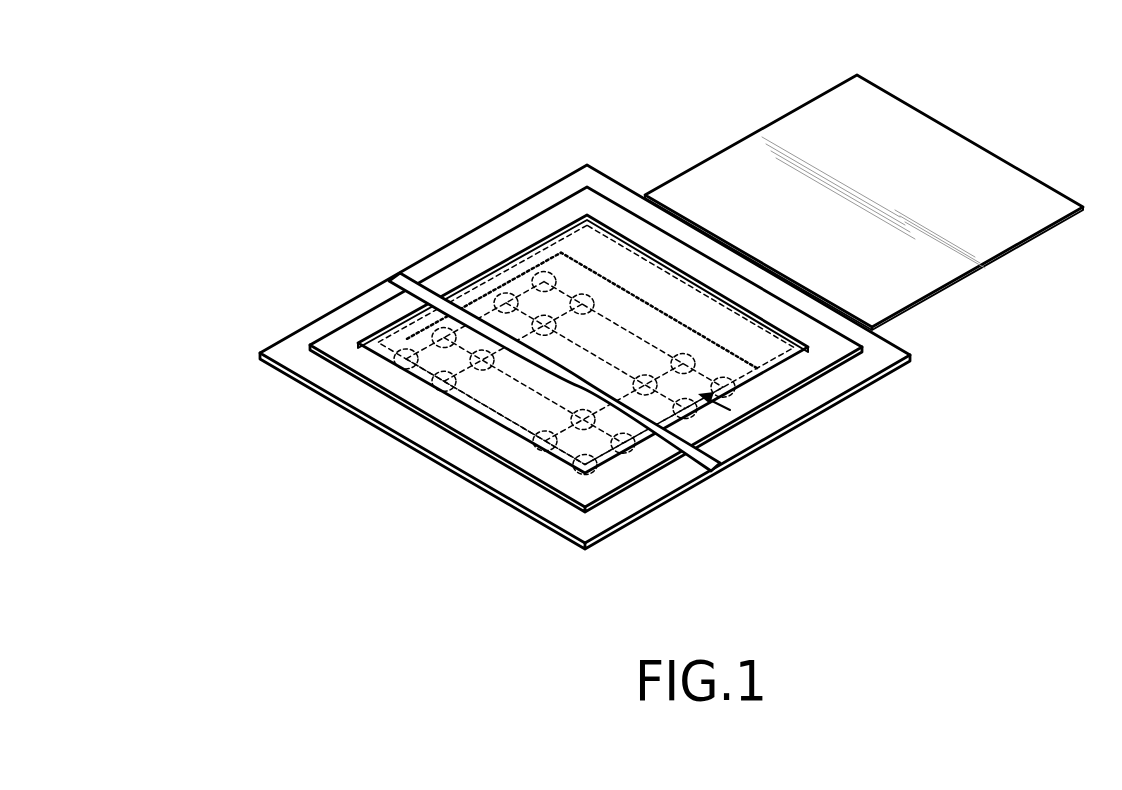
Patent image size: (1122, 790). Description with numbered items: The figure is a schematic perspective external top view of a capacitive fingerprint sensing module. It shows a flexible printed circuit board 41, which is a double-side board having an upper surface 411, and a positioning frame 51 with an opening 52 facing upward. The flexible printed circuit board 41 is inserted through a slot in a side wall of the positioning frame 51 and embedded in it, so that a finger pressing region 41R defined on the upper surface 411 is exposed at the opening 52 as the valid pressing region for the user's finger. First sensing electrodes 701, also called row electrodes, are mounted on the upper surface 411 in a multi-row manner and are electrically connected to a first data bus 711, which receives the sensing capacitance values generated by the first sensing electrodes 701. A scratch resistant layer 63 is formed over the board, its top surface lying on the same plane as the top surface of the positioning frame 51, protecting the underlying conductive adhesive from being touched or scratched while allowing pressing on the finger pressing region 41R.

The flexible printed circuit board 41 is at (869, 194).
The upper surface 411 is at (825, 130).
The finger pressing region 41R is at (586, 366).
The first data bus 711 is at (677, 317).
The opening 52 is at (392, 332).
The positioning frame 51 is at (327, 377).
The first sensing electrodes 701 is at (750, 423).
The scratch resistant layer 63 is at (567, 455).